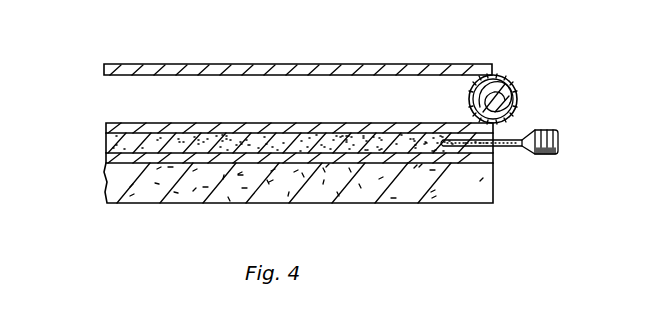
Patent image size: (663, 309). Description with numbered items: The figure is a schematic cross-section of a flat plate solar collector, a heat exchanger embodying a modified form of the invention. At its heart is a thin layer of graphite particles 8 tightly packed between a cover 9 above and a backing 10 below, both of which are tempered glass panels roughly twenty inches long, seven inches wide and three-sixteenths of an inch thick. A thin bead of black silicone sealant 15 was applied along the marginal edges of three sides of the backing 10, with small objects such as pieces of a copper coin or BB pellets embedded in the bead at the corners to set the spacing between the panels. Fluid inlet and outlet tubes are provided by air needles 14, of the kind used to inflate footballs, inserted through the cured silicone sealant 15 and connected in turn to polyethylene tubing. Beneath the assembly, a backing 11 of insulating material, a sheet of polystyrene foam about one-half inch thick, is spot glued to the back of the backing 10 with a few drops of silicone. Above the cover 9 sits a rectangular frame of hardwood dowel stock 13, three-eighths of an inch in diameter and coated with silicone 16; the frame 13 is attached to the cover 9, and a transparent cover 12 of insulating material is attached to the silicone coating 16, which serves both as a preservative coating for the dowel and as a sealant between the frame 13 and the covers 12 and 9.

The thin layer of graphite particles 8 is at (105, 145).
The cover 9 is at (125, 122).
The backing 10 is at (105, 157).
The backing of insulating material 11 is at (105, 186).
The transparent cover 12 is at (113, 65).
The hardwood dowel stock 13 is at (513, 93).
The air needle 14 is at (546, 131).
The black silicone sealant 15 is at (497, 152).
The silicone coating 16 is at (503, 80).